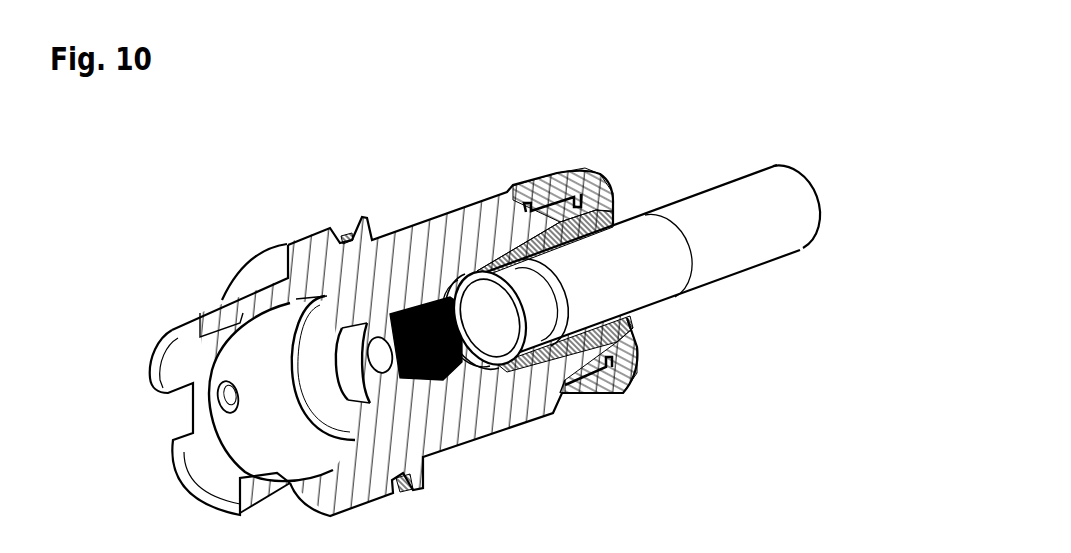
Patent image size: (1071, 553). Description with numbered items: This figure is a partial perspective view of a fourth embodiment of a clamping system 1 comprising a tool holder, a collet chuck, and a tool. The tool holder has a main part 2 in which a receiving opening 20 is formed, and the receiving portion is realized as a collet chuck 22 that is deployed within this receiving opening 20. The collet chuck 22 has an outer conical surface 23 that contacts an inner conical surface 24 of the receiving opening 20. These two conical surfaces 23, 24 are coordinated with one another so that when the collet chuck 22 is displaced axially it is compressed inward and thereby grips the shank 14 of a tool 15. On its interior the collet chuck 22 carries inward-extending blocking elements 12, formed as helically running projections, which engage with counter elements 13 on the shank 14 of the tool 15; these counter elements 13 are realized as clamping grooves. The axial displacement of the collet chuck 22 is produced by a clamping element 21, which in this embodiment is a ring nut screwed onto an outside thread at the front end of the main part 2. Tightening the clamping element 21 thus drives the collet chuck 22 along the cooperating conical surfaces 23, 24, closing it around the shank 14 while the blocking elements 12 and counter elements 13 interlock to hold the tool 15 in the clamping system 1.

The connector assembly 1 is at (486, 268).
The main part 2 is at (332, 270).
The blocking elements 12 is at (518, 300).
The counter elements 13 is at (518, 205).
The shank 14 is at (655, 262).
The tool 15 is at (646, 191).
The receiving opening 20 is at (487, 262).
The clamping element 21 is at (594, 177).
The collet chuck 22 is at (606, 350).
The outer conical surface 23 is at (566, 352).
The inner conical surface 24 is at (577, 237).